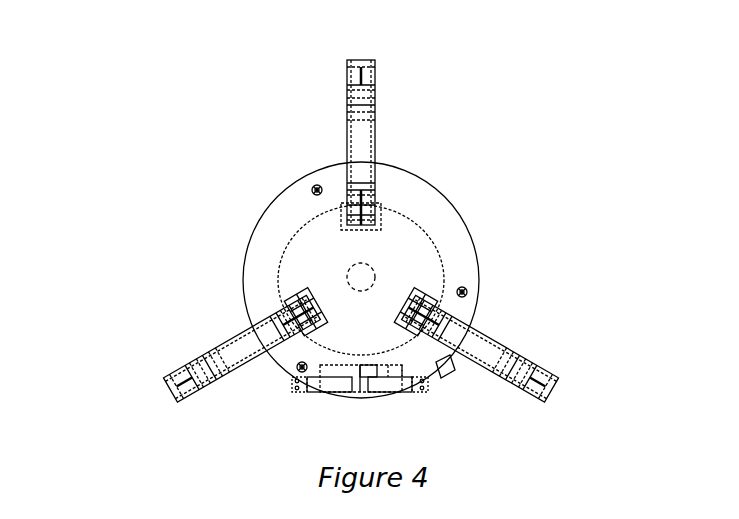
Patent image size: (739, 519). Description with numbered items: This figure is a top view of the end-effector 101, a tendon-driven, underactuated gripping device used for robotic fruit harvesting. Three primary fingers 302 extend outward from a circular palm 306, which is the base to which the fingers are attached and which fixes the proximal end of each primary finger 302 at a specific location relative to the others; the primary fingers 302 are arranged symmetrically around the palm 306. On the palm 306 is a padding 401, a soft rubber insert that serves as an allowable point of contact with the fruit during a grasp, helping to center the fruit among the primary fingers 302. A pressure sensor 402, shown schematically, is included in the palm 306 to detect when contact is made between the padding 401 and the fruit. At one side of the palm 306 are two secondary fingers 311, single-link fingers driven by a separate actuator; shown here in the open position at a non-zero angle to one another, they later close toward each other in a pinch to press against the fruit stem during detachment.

The end-effector 101 is at (176, 131).
The primary finger 302 is at (387, 121).
The palm 306 is at (452, 232).
The padding 401 is at (447, 288).
The pressure sensor 402 is at (347, 278).
The secondary finger 311 is at (301, 397).